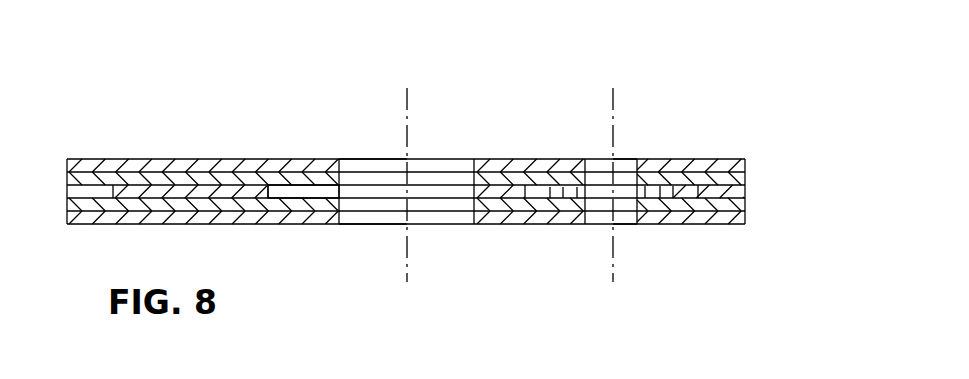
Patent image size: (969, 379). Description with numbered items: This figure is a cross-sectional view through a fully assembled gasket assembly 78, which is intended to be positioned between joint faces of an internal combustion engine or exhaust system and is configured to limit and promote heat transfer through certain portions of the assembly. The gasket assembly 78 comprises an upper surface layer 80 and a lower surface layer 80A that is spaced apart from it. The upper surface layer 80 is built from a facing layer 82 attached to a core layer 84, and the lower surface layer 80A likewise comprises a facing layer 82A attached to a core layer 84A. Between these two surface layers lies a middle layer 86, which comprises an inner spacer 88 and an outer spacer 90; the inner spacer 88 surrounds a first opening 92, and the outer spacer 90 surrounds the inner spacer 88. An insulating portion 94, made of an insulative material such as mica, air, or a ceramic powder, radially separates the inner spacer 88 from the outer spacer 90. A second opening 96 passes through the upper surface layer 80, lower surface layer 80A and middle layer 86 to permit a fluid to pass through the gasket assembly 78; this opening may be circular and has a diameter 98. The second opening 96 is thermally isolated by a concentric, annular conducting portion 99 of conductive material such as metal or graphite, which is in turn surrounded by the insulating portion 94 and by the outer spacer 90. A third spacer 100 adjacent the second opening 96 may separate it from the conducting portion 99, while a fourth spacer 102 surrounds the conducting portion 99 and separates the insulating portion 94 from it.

The gasket assembly 78 is at (128, 143).
The upper surface layer 80 is at (202, 170).
The lower surface layer 80A is at (131, 199).
The insulating portion 94 is at (197, 192).
The inner spacer 88 is at (305, 192).
The first opening 92 is at (365, 190).
The middle layer 86 is at (502, 183).
The fourth spacer 102 is at (552, 199).
The conducting portion 99 is at (565, 199).
The third spacer 100 is at (578, 199).
The second opening 96 is at (622, 176).
The facing layer 82 is at (745, 166).
The core layer 84 is at (746, 178).
The outer spacer 90 is at (746, 189).
The core layer 84A is at (746, 201).
The facing layer 82A is at (746, 212).
The diameter 98 is at (639, 203).